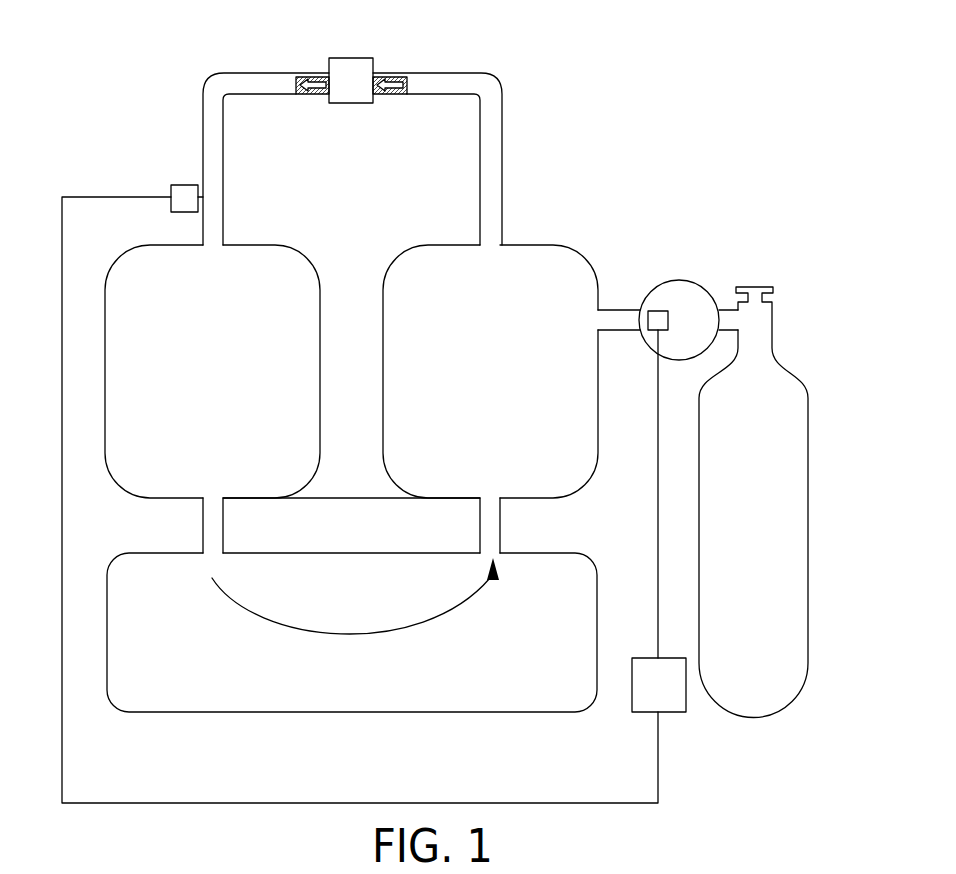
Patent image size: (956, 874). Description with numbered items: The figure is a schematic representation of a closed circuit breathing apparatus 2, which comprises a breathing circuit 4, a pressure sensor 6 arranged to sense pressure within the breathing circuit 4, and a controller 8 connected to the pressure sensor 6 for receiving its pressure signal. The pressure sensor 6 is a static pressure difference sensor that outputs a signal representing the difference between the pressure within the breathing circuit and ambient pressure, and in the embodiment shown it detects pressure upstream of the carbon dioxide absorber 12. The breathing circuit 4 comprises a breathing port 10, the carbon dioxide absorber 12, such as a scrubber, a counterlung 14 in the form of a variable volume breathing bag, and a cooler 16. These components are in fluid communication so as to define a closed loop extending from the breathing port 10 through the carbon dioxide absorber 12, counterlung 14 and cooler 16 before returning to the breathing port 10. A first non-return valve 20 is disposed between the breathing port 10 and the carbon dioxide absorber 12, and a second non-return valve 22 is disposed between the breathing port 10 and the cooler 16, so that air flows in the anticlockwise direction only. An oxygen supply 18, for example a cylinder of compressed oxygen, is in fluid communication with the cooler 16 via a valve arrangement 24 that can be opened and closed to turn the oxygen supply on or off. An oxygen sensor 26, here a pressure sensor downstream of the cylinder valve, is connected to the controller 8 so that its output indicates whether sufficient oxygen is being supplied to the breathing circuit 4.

The closed circuit breathing apparatus 2 is at (590, 172).
The breathing circuit 4 is at (142, 171).
The pressure sensor 6 is at (171, 207).
The controller 8 is at (672, 712).
The breathing port 10 is at (352, 58).
The carbon dioxide absorber 12 is at (115, 482).
The counterlung 14 is at (350, 712).
The cooler 16 is at (587, 480).
The oxygen supply 18 is at (808, 449).
The first non-return valve 20 is at (320, 77).
The second non-return valve 22 is at (393, 77).
The valve arrangement 24 is at (682, 279).
The oxygen sensor 26 is at (658, 311).